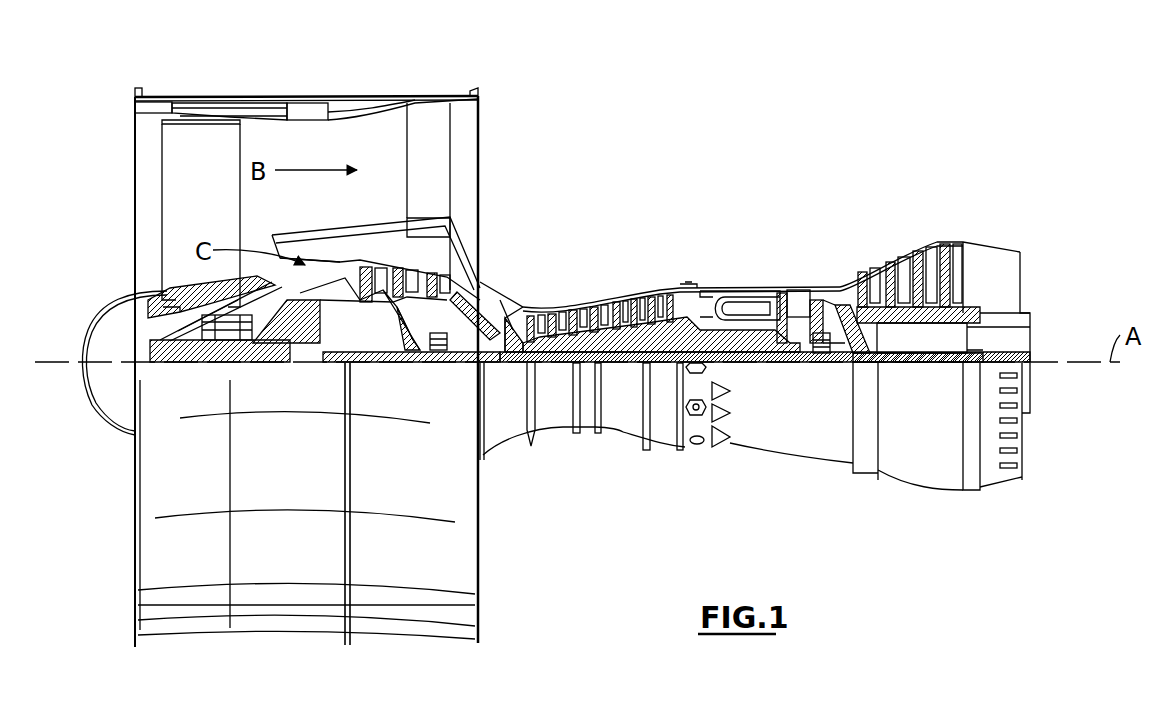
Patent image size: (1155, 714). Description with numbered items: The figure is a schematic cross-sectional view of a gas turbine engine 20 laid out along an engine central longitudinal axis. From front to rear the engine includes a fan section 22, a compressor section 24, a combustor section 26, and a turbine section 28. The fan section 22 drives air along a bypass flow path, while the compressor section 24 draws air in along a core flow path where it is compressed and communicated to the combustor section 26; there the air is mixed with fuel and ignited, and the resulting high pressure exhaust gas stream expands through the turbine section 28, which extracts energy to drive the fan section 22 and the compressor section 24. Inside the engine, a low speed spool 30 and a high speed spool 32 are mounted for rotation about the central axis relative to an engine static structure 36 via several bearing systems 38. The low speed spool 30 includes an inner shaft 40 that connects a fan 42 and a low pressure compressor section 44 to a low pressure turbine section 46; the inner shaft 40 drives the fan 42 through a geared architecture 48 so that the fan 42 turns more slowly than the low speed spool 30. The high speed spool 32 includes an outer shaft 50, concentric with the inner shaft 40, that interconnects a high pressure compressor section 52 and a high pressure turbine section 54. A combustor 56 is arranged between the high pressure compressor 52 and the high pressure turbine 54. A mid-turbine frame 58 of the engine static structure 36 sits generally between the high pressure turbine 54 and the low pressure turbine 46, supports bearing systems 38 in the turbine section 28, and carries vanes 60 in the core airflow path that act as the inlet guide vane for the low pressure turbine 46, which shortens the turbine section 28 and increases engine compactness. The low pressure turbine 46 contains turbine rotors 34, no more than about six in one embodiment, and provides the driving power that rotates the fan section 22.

The gas turbine engine 20 is at (742, 146).
The fan section 22 is at (240, 88).
The compressor section 24 is at (522, 276).
The combustor section 26 is at (733, 266).
The turbine section 28 is at (872, 231).
The low speed spool 30 is at (623, 367).
The high speed spool 32 is at (663, 300).
The turbine rotors 34 is at (950, 324).
The engine static structure 36 is at (667, 430).
The bearing systems 38 is at (240, 345).
The inner shaft 40 is at (495, 363).
The fan 42 is at (218, 218).
The low pressure compressor section 44 is at (413, 272).
The low pressure turbine section 46 is at (917, 253).
The geared architecture 48 is at (310, 345).
The outer shaft 50 is at (738, 363).
The high pressure compressor section 52 is at (616, 300).
The high pressure turbine section 54 is at (793, 292).
The combustor 56 is at (733, 308).
The mid-turbine frame 58 is at (840, 271).
The vanes 60 is at (835, 305).